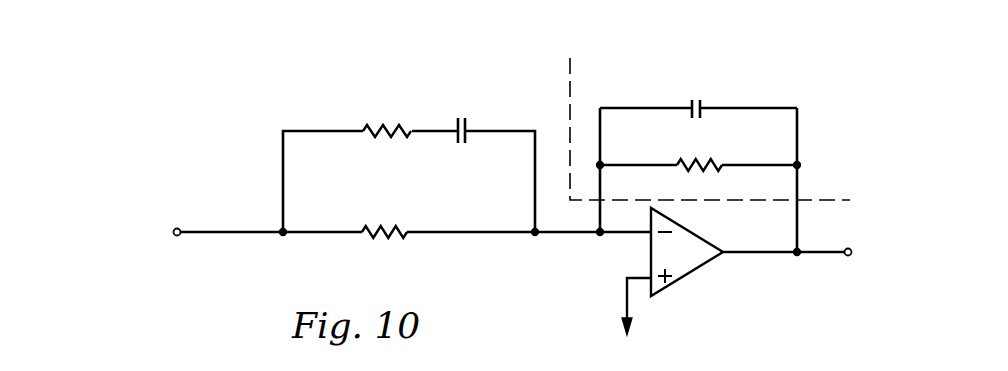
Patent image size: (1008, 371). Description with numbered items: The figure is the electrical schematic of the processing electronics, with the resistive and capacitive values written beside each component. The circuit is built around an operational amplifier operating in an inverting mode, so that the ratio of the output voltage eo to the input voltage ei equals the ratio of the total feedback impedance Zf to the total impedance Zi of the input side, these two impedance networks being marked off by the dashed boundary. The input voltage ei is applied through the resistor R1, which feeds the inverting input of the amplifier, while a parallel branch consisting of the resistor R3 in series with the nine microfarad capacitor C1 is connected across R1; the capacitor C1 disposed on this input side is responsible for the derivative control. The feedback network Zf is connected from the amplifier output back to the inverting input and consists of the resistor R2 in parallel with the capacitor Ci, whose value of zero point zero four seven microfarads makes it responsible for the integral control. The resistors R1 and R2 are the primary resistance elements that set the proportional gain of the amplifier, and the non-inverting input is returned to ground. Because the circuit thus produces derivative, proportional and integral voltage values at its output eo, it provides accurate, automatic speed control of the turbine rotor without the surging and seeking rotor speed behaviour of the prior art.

The primary resistance element R1 is at (506, 233).
The input resistor 5.1K R3 is at (370, 167).
The 9 μf capacitor C1 is at (495, 163).
The primary resistance element R2 is at (698, 165).
The 0.047 μf capacitor Ci is at (698, 88).
The total input impedance Zi is at (679, 125).
The total feedback impedance Zf is at (693, 154).
The input voltage ei is at (240, 236).
The output voltage eo is at (804, 261).